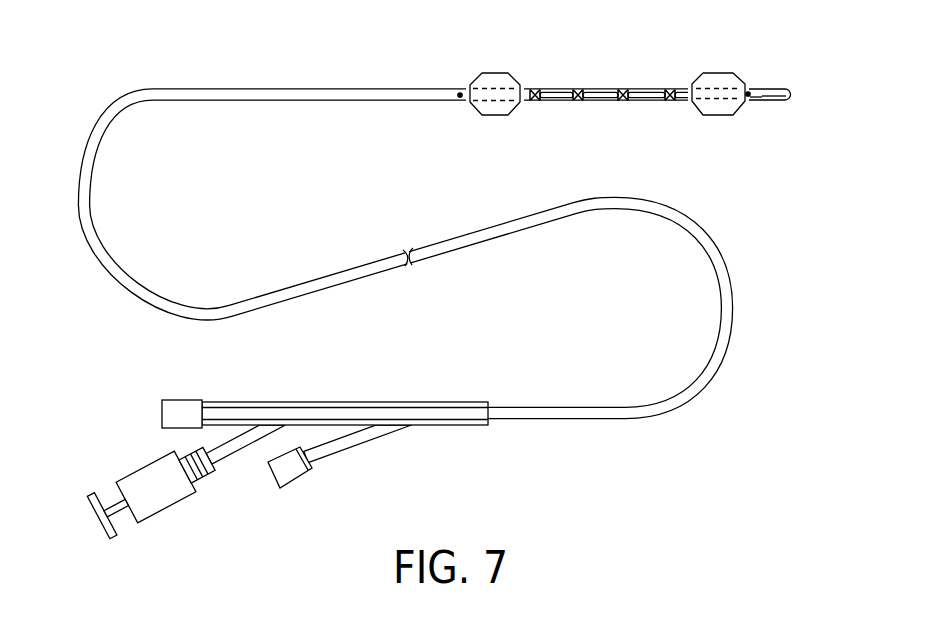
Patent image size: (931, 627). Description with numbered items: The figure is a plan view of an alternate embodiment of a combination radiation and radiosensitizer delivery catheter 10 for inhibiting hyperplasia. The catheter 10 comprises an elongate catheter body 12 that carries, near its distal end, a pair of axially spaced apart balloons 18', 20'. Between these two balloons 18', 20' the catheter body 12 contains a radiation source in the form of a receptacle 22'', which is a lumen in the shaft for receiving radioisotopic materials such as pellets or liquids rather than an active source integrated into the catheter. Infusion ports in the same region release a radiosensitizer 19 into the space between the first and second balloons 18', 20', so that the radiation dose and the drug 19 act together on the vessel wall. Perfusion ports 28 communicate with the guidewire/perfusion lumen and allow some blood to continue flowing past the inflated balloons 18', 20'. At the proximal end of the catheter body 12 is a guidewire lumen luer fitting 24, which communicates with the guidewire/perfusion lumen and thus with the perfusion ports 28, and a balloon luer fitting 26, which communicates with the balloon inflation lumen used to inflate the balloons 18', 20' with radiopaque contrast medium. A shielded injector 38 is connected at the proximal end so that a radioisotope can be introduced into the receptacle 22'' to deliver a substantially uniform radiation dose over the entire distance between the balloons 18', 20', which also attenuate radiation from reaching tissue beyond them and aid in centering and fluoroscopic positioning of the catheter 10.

The combination radiation and radiosensitizer delivery catheter 10 is at (762, 323).
The catheter body 12 is at (317, 279).
The balloon 18' is at (747, 68).
The balloon 20' is at (523, 68).
The radiation source receptacle 22'' is at (616, 69).
The radiosensitizer 19 is at (623, 101).
The perfusion ports 28 is at (460, 98).
The guidewire lumen luer fitting 24 is at (187, 400).
The balloon luer fitting 26 is at (292, 483).
The shielded injector 38 is at (143, 472).